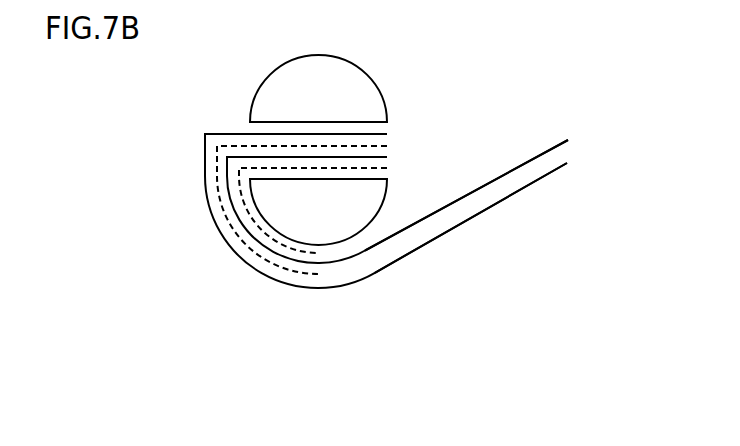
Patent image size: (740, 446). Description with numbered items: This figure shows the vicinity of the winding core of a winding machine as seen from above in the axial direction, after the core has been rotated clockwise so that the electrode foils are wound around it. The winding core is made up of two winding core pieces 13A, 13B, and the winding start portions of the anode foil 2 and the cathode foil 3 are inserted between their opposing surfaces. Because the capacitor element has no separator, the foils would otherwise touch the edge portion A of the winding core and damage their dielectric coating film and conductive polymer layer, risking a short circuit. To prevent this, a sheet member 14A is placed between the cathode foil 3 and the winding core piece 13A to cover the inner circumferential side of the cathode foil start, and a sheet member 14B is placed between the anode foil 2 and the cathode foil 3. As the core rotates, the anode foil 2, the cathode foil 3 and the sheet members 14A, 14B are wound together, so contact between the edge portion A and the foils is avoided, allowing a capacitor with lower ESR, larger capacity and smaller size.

The winding core piece 13B is at (353, 82).
The winding core piece 13A is at (273, 199).
The sheet member 14B is at (390, 146).
The sheet member 14A is at (390, 168).
The anode foil 2 is at (438, 240).
The cathode foil 3 is at (460, 200).
The edge portion A is at (247, 180).